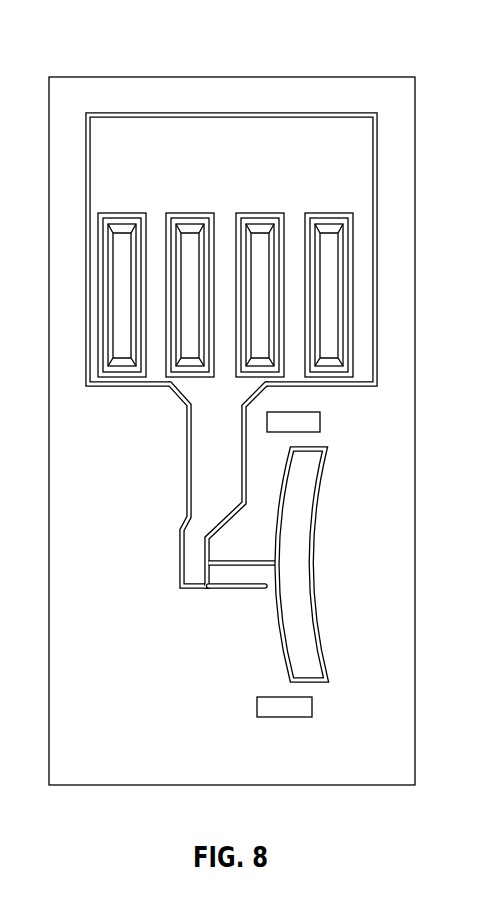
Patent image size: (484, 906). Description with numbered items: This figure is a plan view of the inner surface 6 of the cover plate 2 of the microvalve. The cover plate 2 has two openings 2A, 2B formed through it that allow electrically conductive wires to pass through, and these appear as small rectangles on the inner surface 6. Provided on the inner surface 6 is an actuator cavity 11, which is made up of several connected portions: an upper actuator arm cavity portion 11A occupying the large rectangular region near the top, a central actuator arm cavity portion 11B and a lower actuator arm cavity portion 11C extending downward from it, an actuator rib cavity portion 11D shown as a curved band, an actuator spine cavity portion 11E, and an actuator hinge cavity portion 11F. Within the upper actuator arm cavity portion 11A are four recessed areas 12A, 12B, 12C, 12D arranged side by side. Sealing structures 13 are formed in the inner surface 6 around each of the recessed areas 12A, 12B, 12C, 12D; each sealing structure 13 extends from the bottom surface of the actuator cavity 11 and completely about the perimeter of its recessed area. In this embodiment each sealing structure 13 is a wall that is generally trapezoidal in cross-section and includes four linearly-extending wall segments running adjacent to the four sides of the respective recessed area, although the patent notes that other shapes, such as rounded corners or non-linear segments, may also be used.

The cover plate 2 is at (108, 76).
The inner surface 6 is at (292, 87).
The actuator cavity 11 is at (274, 350).
The upper actuator arm cavity portion 11A is at (334, 142).
The central actuator arm cavity portion 11B is at (205, 454).
The lower actuator arm cavity portion 11C is at (180, 557).
The actuator rib cavity portion 11D is at (310, 497).
The actuator spine cavity portion 11E is at (223, 563).
The actuator hinge cavity portion 11F is at (230, 590).
The recessed area 12A is at (122, 293).
The recessed area 12B is at (188, 213).
The recessed area 12C is at (247, 212).
The recessed area 12D is at (330, 275).
The sealing structure 13 is at (174, 213).
The opening 2A is at (312, 425).
The opening 2B is at (303, 708).